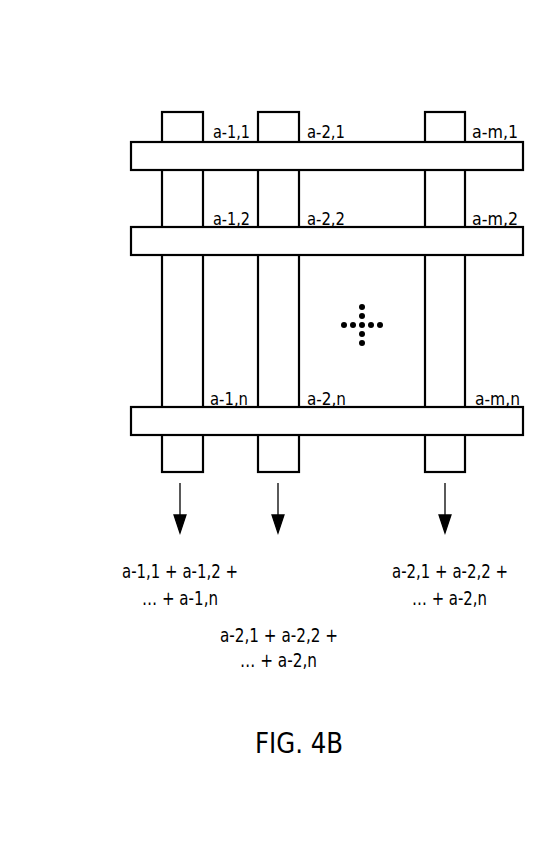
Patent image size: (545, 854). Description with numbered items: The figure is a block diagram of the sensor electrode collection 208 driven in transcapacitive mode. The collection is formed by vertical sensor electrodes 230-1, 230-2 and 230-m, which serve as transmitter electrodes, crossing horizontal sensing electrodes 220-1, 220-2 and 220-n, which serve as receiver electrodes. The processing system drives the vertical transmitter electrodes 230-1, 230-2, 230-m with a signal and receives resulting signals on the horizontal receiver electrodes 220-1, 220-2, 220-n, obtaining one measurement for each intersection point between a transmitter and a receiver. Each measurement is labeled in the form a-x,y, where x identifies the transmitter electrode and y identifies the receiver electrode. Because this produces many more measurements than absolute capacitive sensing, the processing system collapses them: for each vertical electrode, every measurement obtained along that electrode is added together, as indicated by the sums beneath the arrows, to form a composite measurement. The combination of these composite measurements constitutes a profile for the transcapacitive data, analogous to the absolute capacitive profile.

The sensor electrode collection 208 is at (197, 43).
The horizontal sensing electrode 220-1 is at (150, 142).
The horizontal sensing electrode 220-2 is at (373, 227).
The horizontal sensing electrode 220-n is at (363, 406).
The vertical sensor electrode 230-1 is at (162, 455).
The vertical sensor electrode 230-2 is at (299, 455).
The vertical sensor electrode 230-m is at (465, 453).